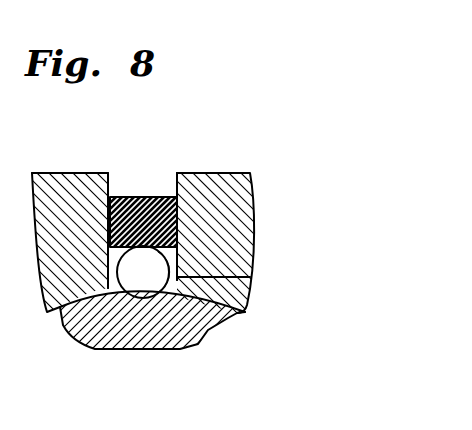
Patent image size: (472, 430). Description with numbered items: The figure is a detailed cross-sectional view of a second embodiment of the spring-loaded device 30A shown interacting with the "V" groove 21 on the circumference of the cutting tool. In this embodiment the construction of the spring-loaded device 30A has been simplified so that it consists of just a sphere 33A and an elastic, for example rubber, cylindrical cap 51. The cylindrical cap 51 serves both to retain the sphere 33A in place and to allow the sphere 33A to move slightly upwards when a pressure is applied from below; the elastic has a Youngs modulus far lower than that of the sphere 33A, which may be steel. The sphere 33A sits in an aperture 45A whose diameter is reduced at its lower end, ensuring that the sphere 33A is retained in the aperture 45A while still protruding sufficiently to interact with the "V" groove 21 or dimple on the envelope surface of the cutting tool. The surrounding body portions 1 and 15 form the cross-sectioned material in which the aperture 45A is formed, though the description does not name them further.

The ball joint housing 1 is at (80, 340).
The housing wall 15 is at (229, 168).
The "V" groove 21 is at (205, 322).
The cylindrical cap 51 is at (146, 196).
The sphere 33A is at (153, 273).
The spring-loaded device 30A is at (157, 152).
The aperture 45A is at (177, 172).